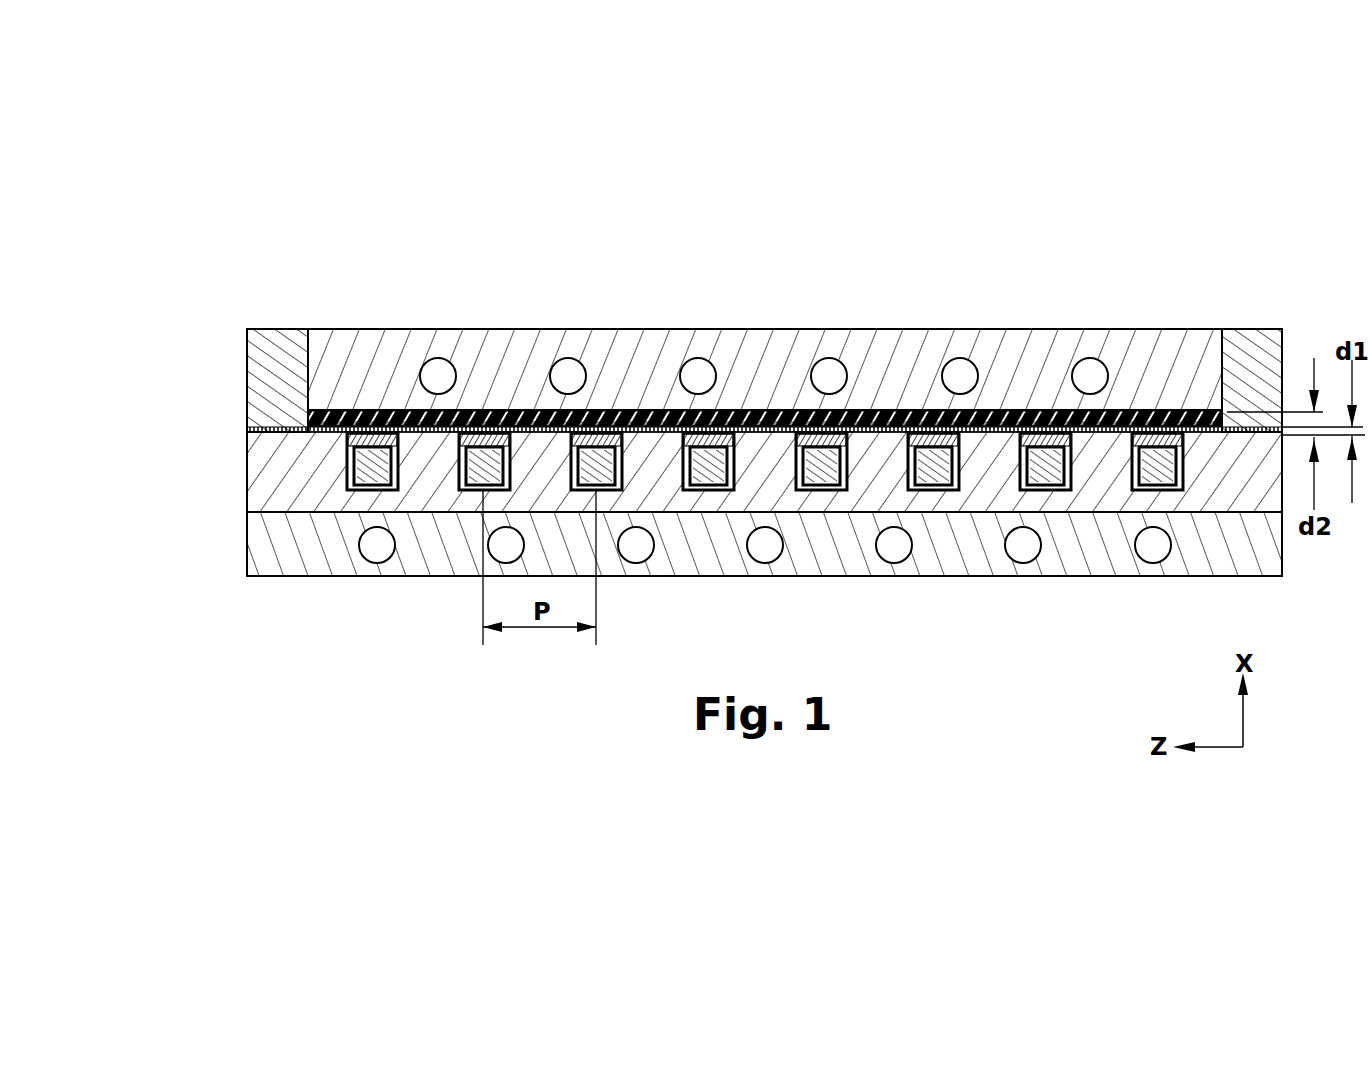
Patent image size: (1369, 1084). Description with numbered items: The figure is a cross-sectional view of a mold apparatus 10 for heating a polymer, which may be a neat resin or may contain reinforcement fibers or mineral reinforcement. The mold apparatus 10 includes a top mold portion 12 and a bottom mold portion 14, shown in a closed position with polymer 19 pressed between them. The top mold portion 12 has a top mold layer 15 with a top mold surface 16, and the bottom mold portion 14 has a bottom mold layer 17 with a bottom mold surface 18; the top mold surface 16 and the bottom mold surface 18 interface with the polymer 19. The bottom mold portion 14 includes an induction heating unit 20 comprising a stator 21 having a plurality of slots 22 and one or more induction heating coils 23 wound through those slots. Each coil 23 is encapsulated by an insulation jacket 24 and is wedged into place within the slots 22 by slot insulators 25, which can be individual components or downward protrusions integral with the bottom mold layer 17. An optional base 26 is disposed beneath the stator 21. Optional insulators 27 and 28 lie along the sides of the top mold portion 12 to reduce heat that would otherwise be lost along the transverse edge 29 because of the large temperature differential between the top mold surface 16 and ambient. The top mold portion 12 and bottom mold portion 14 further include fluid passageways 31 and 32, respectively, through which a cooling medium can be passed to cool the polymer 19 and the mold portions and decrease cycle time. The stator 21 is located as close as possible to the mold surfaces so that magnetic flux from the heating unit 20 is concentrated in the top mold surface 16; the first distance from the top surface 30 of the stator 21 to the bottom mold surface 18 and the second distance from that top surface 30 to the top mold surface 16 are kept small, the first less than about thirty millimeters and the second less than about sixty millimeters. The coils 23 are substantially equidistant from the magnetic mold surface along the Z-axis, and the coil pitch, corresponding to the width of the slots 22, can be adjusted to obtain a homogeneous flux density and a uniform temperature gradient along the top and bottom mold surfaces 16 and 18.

The mold apparatus 10 is at (336, 264).
The top mold portion 12 is at (132, 385).
The bottom mold portion 14 is at (140, 470).
The top mold layer 15 is at (395, 352).
The top mold surface 16 is at (635, 413).
The bottom mold layer 17 is at (873, 427).
The bottom mold surface 18 is at (1030, 423).
The polymer 19 is at (1143, 422).
The induction heating unit 20 is at (268, 500).
The stator 21 is at (305, 462).
The slots 22 is at (393, 490).
The induction heating coils 23 is at (928, 467).
The insulation jacket 24 is at (957, 477).
The slot insulators 25 is at (960, 440).
The base 26 is at (313, 537).
The insulator 27 is at (278, 367).
The insulator 28 is at (1257, 347).
The transverse edge 29 is at (303, 403).
The top surface of stator 30 is at (337, 426).
The fluid passageways 31 is at (703, 373).
The fluid passageways 32 is at (1020, 547).